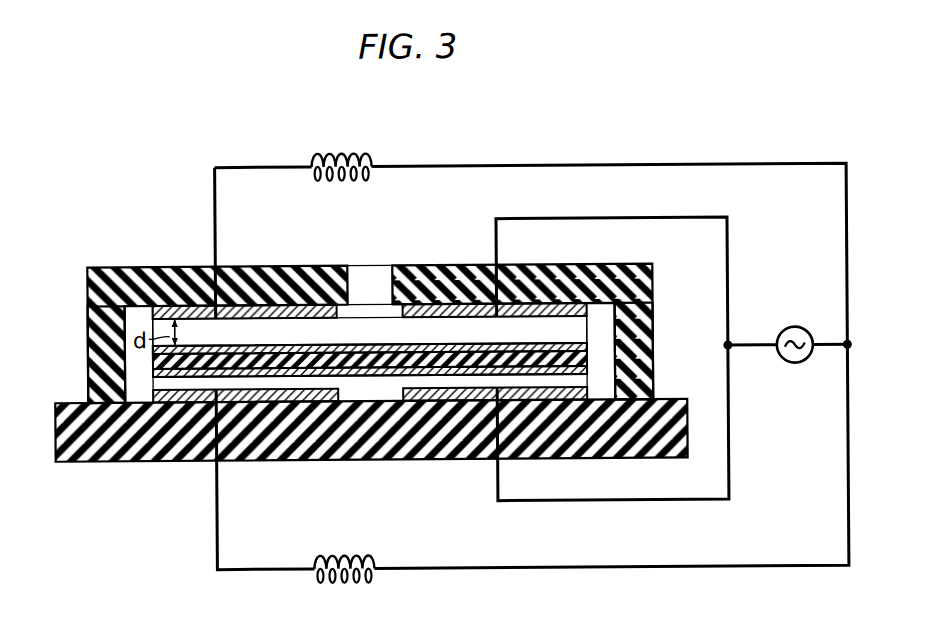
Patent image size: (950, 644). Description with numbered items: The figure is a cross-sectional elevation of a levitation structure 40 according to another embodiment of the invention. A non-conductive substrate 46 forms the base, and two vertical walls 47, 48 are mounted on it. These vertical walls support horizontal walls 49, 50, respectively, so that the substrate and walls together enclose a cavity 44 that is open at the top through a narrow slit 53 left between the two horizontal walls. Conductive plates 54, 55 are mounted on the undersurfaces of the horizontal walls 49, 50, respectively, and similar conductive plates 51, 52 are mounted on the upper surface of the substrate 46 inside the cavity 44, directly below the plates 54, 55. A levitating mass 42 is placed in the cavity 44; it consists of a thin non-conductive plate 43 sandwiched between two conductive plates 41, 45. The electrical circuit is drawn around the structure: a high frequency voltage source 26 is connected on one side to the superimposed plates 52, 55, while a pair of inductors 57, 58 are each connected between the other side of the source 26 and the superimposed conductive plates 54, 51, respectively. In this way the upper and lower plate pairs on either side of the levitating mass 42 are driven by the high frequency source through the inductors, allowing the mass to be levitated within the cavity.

The levitation structure 40 is at (450, 118).
The high frequency voltage source 26 is at (793, 329).
The conductive plate 41 is at (294, 344).
The levitating mass 42 is at (644, 339).
The non-conductive plate 43 is at (153, 362).
The cavity 44 is at (603, 379).
The conductive plate 45 is at (358, 376).
The non-conductive substrate 46 is at (103, 453).
The vertical wall 47 is at (88, 300).
The vertical wall 48 is at (655, 302).
The horizontal wall 49 is at (141, 263).
The horizontal wall 50 is at (553, 265).
The conductive plate 51 is at (181, 397).
The conductive plate 52 is at (467, 400).
The narrow slit 53 is at (373, 277).
The conductive plate 54 is at (195, 304).
The conductive plate 55 is at (447, 292).
The inductor 57 is at (348, 153).
The inductor 58 is at (345, 555).